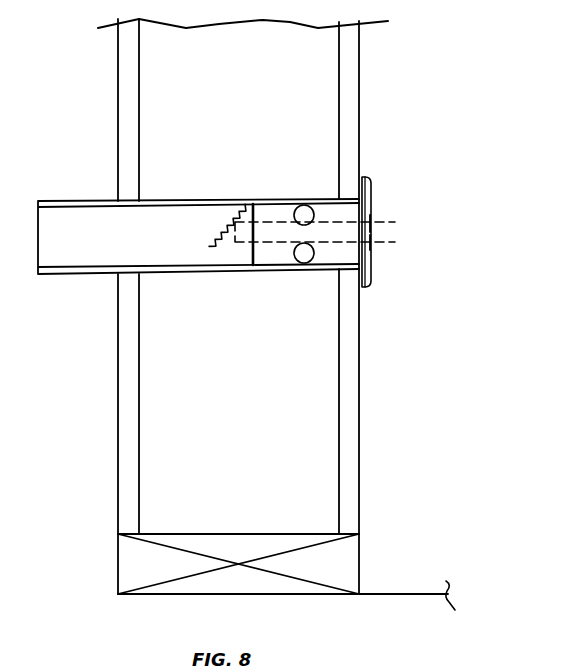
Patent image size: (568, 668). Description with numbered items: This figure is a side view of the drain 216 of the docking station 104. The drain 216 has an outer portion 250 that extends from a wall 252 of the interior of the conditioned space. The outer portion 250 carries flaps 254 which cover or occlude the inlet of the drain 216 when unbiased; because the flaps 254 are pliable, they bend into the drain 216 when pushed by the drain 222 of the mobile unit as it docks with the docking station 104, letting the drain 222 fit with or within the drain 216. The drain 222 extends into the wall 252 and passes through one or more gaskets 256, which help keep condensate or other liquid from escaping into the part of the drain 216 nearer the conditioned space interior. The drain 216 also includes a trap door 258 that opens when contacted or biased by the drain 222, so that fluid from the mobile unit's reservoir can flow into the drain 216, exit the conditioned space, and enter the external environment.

The docking station 104 is at (286, 313).
The wall 252 is at (398, 47).
The drain 216 is at (164, 190).
The trap door 258 is at (251, 252).
The drain 222 is at (392, 231).
The gaskets 256 is at (304, 205).
The outer portion 250 is at (368, 177).
The flaps 254 is at (368, 218).